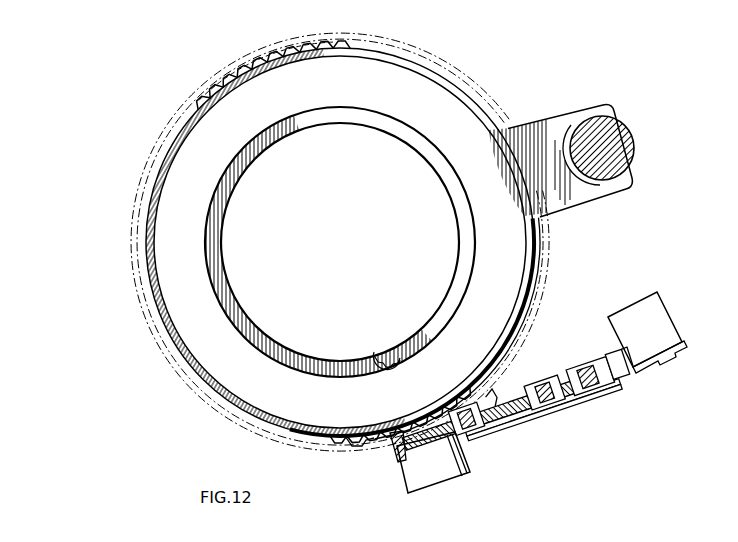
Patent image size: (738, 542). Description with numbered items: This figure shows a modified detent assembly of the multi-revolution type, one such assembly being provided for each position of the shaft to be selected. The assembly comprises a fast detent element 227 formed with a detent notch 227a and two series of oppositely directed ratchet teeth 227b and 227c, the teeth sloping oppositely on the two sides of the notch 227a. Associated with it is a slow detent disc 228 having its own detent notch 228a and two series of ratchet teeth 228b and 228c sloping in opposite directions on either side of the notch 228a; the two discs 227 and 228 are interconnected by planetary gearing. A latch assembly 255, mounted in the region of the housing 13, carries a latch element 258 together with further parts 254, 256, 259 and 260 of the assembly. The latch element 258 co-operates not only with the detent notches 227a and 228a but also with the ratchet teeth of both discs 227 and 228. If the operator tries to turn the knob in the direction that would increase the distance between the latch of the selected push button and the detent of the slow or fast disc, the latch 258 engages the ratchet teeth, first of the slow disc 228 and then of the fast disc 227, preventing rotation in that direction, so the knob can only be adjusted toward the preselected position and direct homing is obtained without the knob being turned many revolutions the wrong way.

The housing 13 is at (674, 323).
The fast detent element 227 is at (380, 62).
The detent notch 227a is at (241, 86).
The ratchet teeth 227b is at (326, 52).
The ratchet teeth 227c is at (370, 424).
The slow detent disc 228 is at (277, 50).
The detent notch 228a is at (387, 445).
The ratchet teeth 228b is at (497, 395).
The ratchet teeth 228c is at (368, 437).
The block 254 is at (400, 467).
The latch assembly 255 is at (637, 442).
The end piece 256 is at (624, 366).
The latch element 258 is at (452, 440).
The plate 259 is at (517, 421).
The plate 260 is at (513, 433).